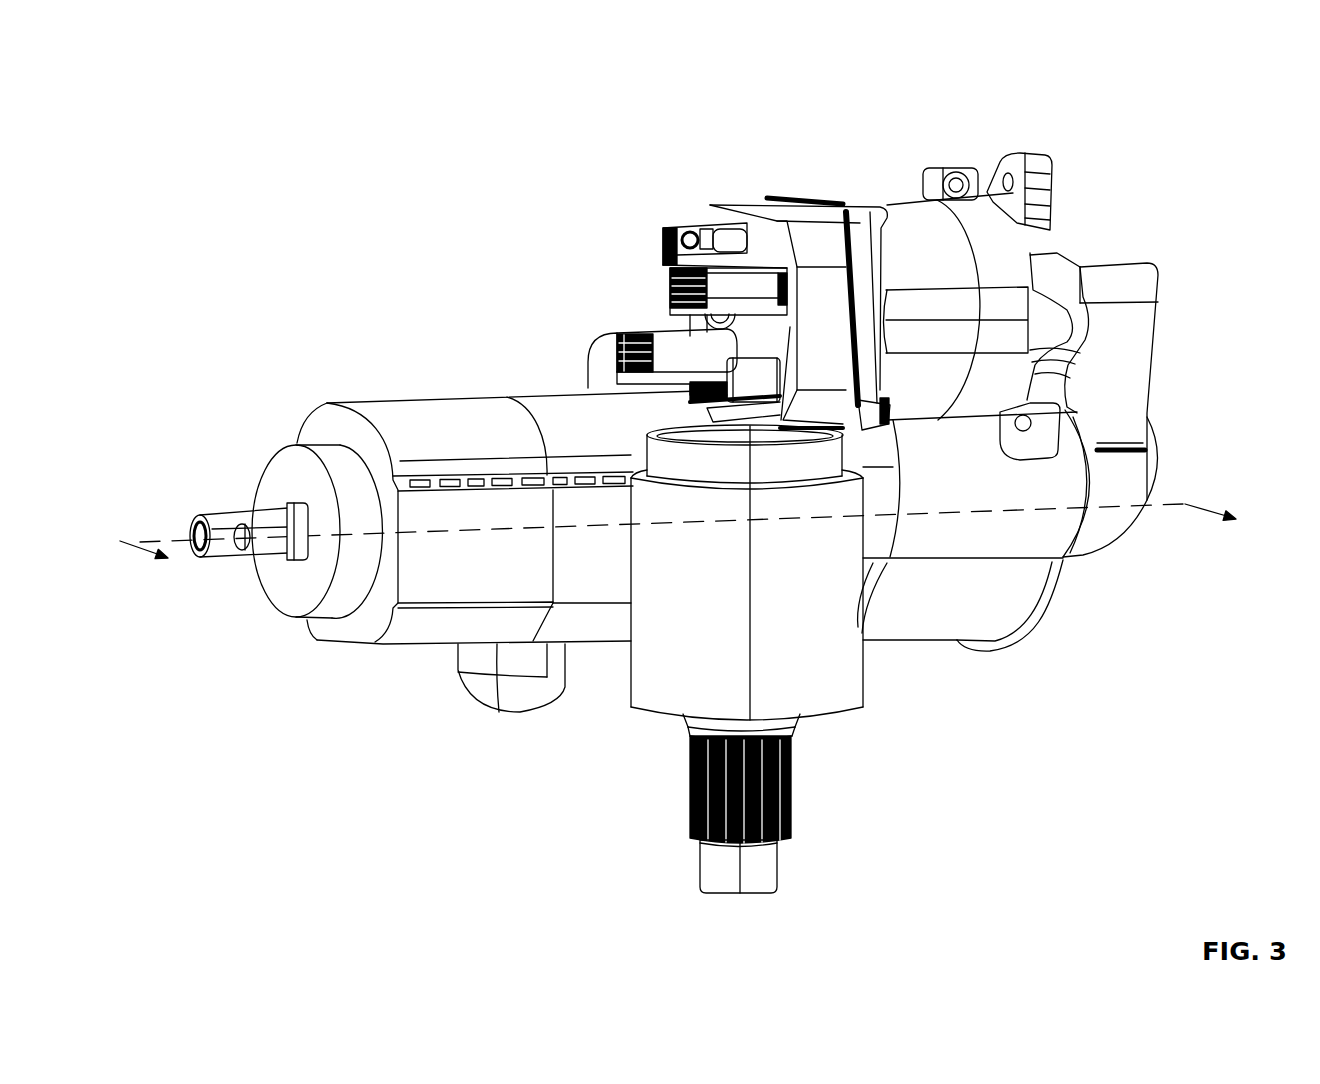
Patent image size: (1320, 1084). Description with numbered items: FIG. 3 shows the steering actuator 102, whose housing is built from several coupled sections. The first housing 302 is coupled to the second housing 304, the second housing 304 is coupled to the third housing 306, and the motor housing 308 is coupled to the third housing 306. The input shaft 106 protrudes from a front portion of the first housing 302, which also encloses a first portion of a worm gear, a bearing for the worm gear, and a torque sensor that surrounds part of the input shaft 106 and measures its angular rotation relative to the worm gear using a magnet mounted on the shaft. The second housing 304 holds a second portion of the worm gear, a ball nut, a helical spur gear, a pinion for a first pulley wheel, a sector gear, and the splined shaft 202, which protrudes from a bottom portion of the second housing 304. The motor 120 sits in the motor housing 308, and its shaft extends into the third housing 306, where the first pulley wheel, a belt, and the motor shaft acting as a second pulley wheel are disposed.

The steering actuator 102 is at (1122, 70).
The input shaft 106 is at (265, 585).
The motor 120 is at (981, 185).
The splined shaft 202 is at (792, 790).
The first housing 302 is at (372, 401).
The second housing 304 is at (543, 392).
The third housing 306 is at (1148, 267).
The motor housing 308 is at (883, 203).